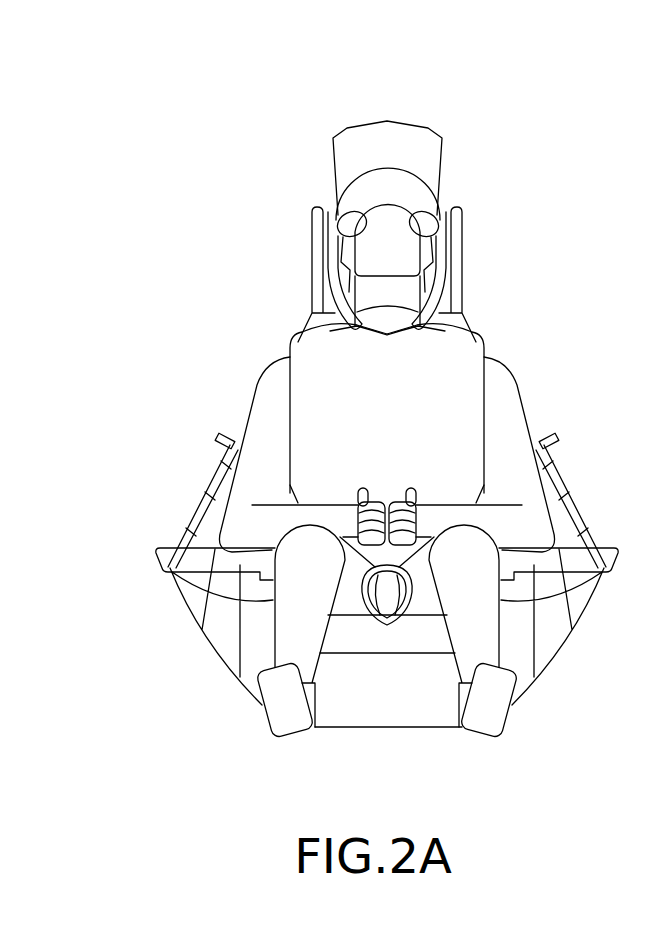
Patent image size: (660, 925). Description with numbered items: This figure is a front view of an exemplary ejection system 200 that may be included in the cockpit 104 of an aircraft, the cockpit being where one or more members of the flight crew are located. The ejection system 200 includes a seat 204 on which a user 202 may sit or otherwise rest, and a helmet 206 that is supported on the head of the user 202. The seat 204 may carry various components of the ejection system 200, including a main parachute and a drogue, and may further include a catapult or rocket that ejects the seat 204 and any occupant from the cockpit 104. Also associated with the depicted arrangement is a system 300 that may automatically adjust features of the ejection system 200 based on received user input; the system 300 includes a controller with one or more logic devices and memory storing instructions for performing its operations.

The cockpit 104 is at (363, 115).
The ejection system 200 is at (263, 288).
The user 202 is at (513, 370).
The seat 204 is at (340, 722).
The helmet 206 is at (407, 195).
The system 300 is at (187, 495).